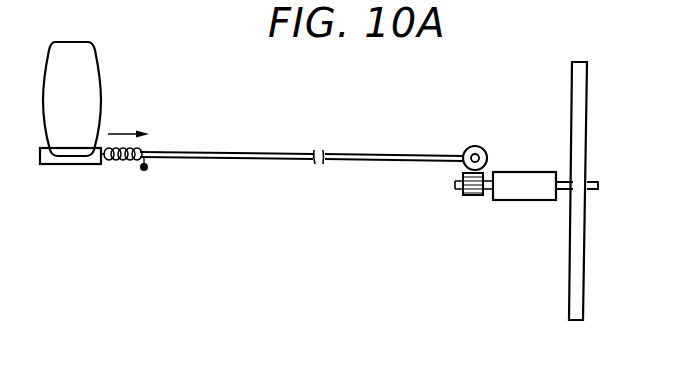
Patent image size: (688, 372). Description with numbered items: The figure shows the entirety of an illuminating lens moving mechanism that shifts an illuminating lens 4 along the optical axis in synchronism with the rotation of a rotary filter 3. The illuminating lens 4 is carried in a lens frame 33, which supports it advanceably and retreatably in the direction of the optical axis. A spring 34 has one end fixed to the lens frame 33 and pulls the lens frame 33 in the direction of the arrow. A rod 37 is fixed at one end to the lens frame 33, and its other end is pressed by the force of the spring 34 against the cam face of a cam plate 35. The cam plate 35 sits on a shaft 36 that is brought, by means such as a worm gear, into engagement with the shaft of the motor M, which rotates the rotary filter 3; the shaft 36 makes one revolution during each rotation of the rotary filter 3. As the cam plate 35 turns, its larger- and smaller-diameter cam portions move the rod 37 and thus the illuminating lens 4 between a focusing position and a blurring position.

The illuminating lens 4 is at (77, 50).
The lens frame 33 is at (69, 165).
The spring 34 is at (128, 162).
The rod 37 is at (247, 160).
The cam plate 35 is at (483, 150).
The shaft 36 is at (470, 149).
The motor M is at (519, 200).
The rotary filter 3 is at (586, 242).